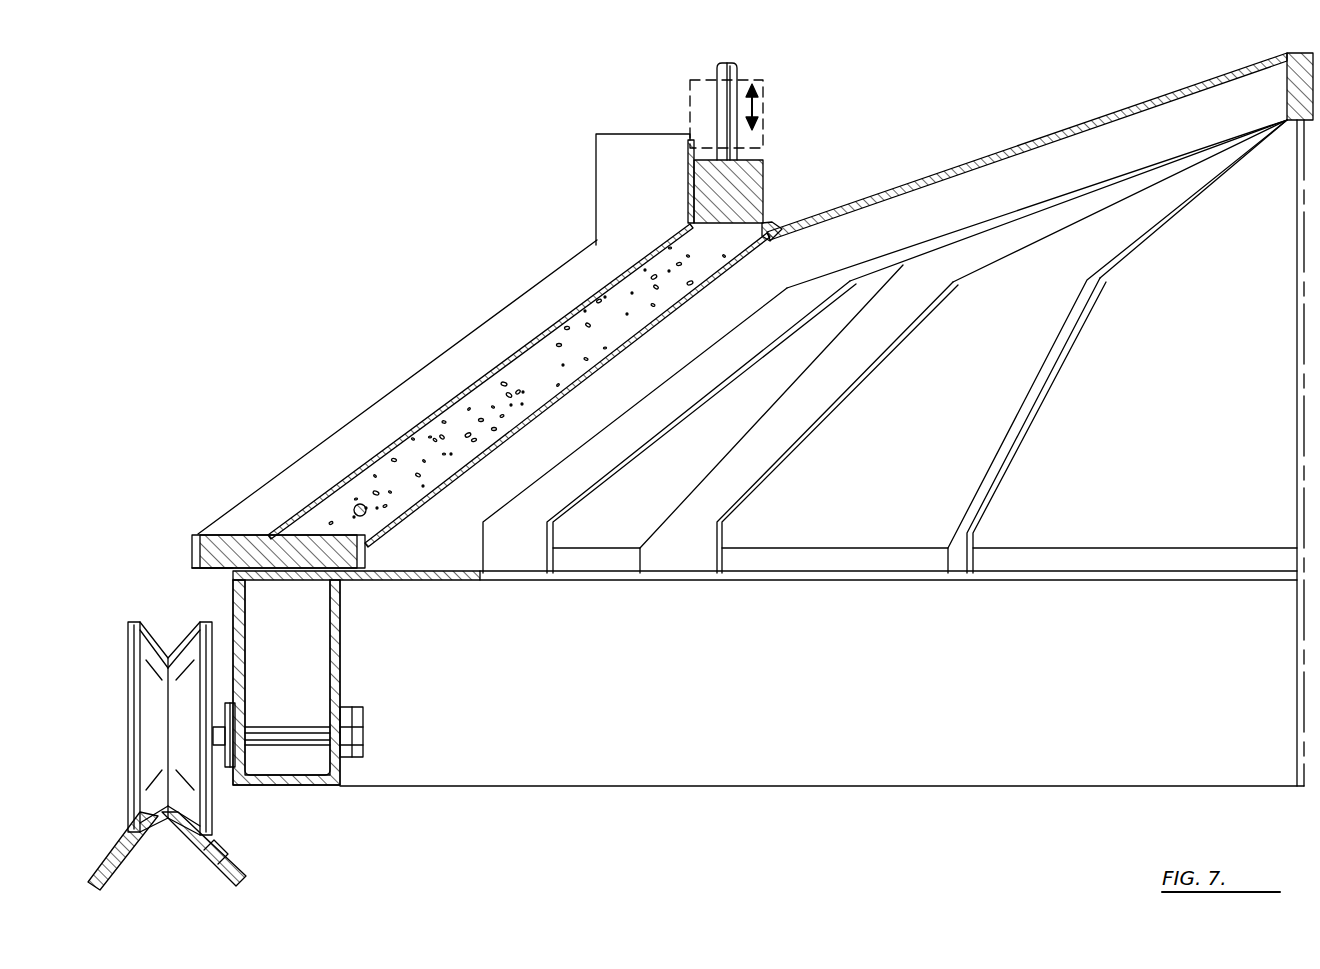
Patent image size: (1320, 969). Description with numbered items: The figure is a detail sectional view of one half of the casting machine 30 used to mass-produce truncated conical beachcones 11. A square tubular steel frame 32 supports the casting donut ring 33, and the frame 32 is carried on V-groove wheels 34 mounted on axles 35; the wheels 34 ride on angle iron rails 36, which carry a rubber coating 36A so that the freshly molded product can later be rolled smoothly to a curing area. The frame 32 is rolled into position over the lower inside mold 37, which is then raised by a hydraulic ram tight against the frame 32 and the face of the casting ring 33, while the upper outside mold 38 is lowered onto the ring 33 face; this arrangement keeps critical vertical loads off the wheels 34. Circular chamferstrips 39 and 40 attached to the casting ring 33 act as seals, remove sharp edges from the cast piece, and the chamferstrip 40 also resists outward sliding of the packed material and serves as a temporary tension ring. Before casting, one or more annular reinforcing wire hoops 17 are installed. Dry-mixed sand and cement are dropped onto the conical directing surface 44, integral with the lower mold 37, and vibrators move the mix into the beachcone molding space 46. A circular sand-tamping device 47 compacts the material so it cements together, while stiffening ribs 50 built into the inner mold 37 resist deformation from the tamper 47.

The casting machine 30 is at (392, 312).
The beachcone 11 is at (457, 395).
The annular reinforcing wire hoop 17 is at (358, 502).
The upper outside mold 38 is at (390, 444).
The lower inside mold 37 is at (683, 310).
The beachcone molding space 46 is at (650, 291).
The chamferstrip 40 is at (270, 533).
The sand-tamping device 47 is at (763, 186).
The chamferstrip 39 is at (775, 230).
The conical directing surface 44 is at (1030, 140).
The stiffening ribs 50 is at (711, 470).
The casting donut ring 33 is at (215, 573).
The square tubular steel frame 32 is at (342, 646).
The V-groove wheels 34 is at (187, 700).
The axle 35 is at (302, 725).
The angle iron rail 36 is at (235, 872).
The rubber coating 36A is at (217, 847).